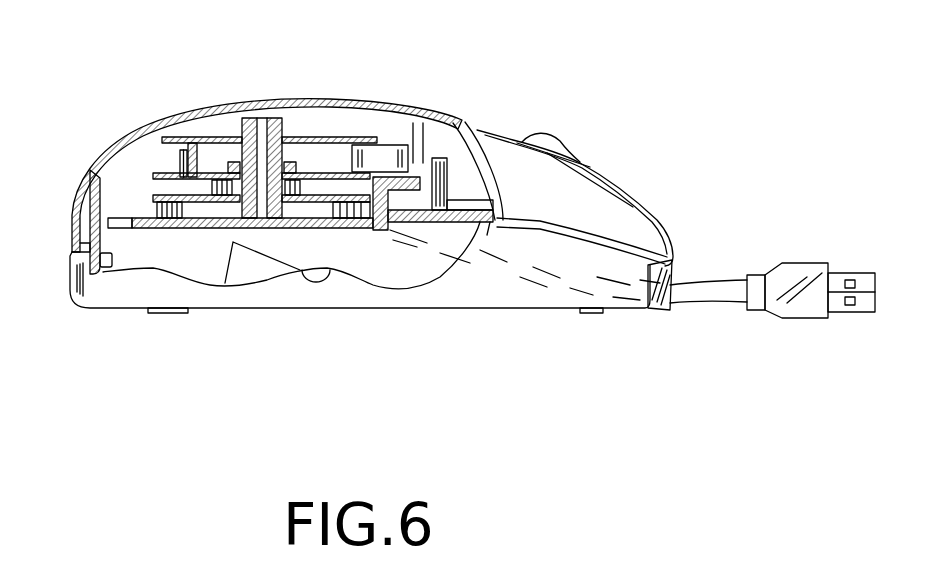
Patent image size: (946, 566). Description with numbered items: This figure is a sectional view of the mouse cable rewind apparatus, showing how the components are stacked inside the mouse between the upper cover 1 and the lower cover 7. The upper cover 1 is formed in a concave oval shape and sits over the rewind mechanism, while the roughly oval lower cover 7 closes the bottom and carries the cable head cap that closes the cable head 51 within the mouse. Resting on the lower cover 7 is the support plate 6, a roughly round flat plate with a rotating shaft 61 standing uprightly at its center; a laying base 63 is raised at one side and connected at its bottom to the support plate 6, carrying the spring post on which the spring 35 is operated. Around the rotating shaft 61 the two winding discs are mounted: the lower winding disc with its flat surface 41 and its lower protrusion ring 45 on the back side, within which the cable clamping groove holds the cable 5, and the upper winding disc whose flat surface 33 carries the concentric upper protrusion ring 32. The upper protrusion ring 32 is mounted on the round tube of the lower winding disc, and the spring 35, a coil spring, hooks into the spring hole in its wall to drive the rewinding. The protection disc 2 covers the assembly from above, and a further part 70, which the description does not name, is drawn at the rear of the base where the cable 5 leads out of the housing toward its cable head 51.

The upper cover 1 is at (575, 192).
The protection disc 2 is at (307, 100).
The cable 5 is at (337, 224).
The cable head 51 is at (788, 305).
The support plate 6 is at (188, 228).
The lower cover 7 is at (513, 287).
The upper protrusion ring 32 is at (181, 138).
The flat surface 33 is at (153, 175).
The spring 35 is at (178, 167).
The flat surface 41 is at (155, 196).
The lower protrusion ring 45 is at (160, 210).
The rotating shaft 61 is at (242, 118).
The laying base 63 is at (410, 180).
The support block 70 is at (443, 223).